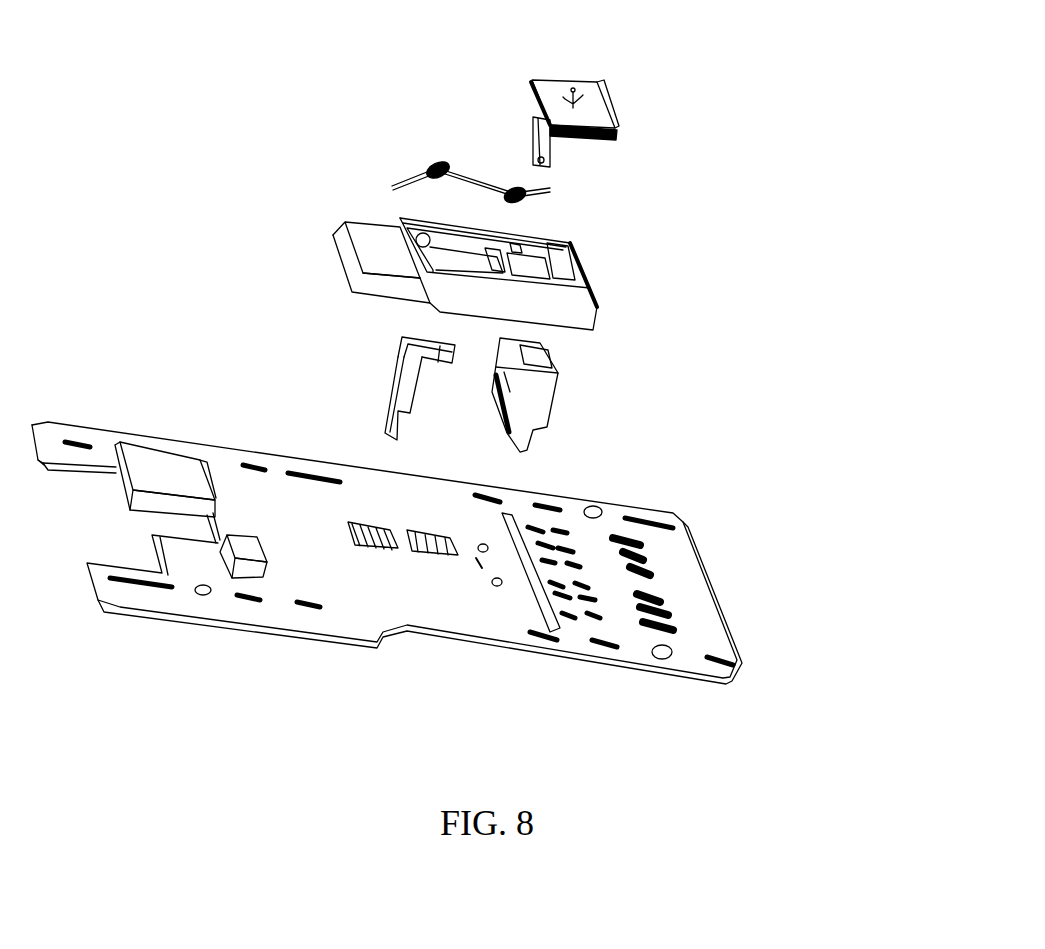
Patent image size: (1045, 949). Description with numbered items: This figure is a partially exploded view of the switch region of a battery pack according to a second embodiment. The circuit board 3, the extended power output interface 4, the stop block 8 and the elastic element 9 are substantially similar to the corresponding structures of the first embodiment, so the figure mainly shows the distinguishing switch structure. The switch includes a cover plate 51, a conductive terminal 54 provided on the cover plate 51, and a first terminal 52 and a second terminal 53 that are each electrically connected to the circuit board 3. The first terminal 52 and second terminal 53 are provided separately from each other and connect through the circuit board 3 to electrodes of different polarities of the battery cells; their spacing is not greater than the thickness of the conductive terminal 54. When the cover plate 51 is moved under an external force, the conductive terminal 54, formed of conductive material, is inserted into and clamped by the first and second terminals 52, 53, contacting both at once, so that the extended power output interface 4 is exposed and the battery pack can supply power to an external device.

The circuit board 3 is at (687, 598).
The extended power output interface 4 is at (528, 408).
The stop block 8 is at (560, 303).
The elastic element 9 is at (433, 170).
The cover plate 51 is at (601, 91).
The first terminal 52 is at (318, 326).
The second terminal 53 is at (393, 377).
The conductive terminal 54 is at (532, 130).